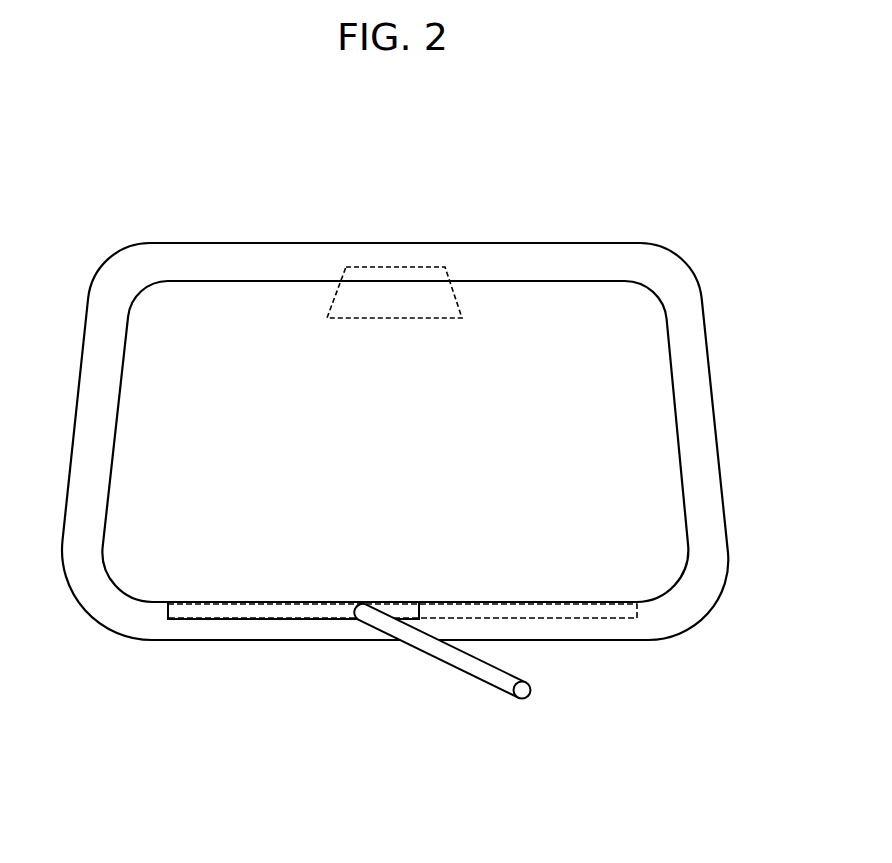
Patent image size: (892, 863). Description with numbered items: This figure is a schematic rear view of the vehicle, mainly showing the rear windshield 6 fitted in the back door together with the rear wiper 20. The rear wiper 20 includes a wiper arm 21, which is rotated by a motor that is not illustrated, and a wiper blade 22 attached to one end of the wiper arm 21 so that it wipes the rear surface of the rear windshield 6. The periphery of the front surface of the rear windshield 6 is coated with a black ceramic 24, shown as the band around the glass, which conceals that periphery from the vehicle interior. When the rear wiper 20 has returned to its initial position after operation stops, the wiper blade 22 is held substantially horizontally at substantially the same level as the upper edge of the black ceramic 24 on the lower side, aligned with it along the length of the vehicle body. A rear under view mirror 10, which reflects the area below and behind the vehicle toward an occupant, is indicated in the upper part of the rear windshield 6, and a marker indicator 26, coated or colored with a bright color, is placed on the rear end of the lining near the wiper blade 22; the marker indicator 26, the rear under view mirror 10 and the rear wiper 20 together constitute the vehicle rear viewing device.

The rear windshield 6 is at (634, 350).
The rear under view mirror 10 is at (455, 275).
The rear wiper 20 is at (442, 704).
The wiper arm 21 is at (427, 647).
The wiper blade 22 is at (288, 612).
The black ceramic 24 is at (137, 627).
The marker indicator 26 is at (232, 620).